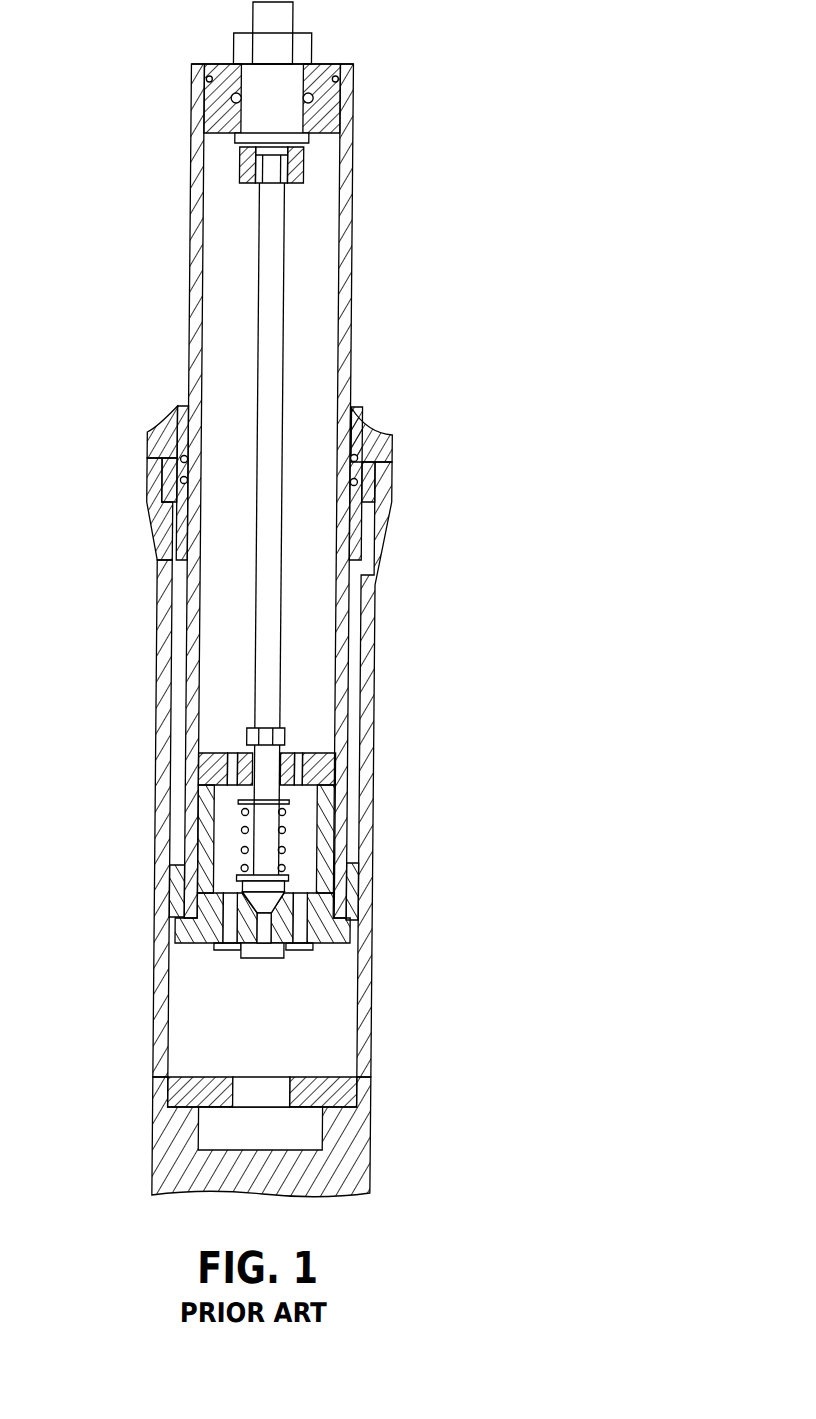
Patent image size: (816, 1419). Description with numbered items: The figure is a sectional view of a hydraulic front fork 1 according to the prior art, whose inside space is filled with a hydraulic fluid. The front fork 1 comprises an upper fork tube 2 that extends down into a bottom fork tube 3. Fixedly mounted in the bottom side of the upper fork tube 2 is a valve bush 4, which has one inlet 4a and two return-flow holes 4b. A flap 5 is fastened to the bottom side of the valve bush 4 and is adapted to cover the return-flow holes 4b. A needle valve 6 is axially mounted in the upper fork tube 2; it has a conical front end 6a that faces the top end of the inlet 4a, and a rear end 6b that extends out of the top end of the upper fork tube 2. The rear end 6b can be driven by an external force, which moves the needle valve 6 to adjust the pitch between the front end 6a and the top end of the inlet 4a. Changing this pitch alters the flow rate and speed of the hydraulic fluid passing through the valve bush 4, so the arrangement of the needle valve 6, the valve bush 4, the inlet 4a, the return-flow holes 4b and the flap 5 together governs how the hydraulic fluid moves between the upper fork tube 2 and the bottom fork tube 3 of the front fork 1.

The front fork 1 is at (420, 166).
The upper fork tube 2 is at (357, 247).
The bottom fork tube 3 is at (375, 630).
The valve bush 4 is at (325, 907).
The inlet 4a is at (271, 953).
The return-flow holes 4b is at (305, 922).
The flap 5 is at (315, 950).
The needle valve 6 is at (275, 358).
The conical front end 6a is at (258, 893).
The rear end 6b is at (263, 17).